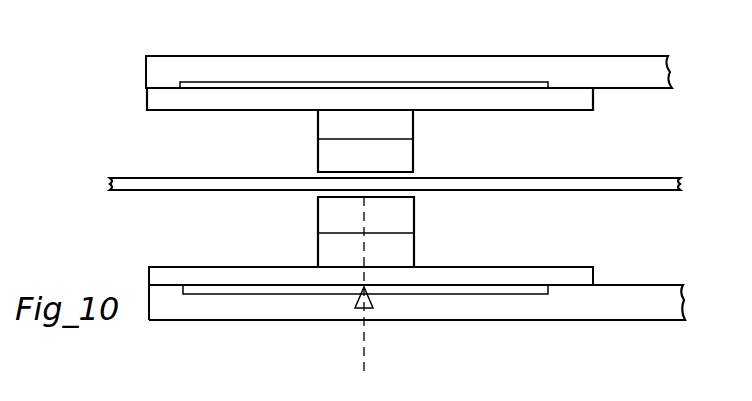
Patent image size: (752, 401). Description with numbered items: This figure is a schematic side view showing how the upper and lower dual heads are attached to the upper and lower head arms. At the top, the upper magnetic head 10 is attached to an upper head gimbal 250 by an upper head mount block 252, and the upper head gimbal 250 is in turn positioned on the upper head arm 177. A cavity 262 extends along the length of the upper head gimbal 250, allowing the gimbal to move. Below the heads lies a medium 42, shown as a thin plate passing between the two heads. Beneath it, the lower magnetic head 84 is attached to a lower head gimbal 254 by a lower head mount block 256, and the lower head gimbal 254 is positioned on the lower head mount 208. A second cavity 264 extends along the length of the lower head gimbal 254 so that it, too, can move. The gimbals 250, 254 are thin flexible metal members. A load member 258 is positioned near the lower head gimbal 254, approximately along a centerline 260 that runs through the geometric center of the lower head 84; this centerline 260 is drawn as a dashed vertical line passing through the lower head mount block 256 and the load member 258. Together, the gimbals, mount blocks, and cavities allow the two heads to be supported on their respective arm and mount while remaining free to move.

The upper head arm 177 is at (654, 79).
The cavity 262 is at (268, 80).
The upper head gimbal 250 is at (247, 99).
The upper head mount block 252 is at (413, 122).
The upper magnetic head 10 is at (382, 165).
The substrate 42 is at (188, 195).
The lower magnetic head 84 is at (398, 223).
The lower head mount block 256 is at (404, 247).
The centerline 260 is at (366, 342).
The lower head gimbal 254 is at (530, 267).
The lower head mount 208 is at (656, 309).
The cavity 264 is at (469, 295).
The load member 258 is at (353, 304).